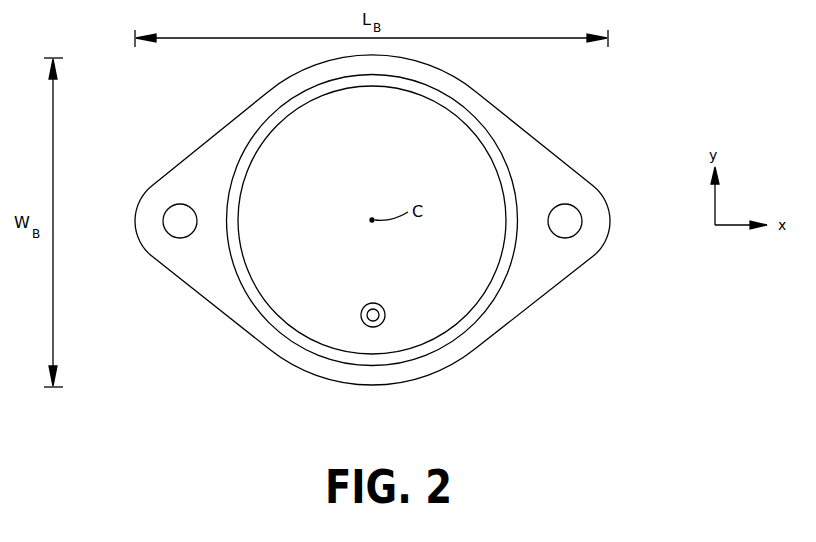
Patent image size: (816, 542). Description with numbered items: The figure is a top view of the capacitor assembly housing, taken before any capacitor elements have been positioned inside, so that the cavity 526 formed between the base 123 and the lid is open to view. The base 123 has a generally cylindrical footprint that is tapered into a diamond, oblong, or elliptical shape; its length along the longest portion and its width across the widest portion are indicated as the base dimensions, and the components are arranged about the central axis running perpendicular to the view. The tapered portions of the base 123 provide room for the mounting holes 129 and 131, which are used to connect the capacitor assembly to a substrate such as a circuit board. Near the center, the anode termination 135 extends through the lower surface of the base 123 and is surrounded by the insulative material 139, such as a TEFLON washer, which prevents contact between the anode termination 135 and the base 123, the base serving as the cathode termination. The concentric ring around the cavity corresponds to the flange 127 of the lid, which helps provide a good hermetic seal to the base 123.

The base 123 is at (203, 168).
The flange 127 is at (487, 140).
The cavity 526 is at (383, 167).
The mounting hole 129 is at (172, 222).
The mounting hole 131 is at (572, 222).
The anode termination 135 is at (364, 306).
The insulative material 139 is at (386, 306).